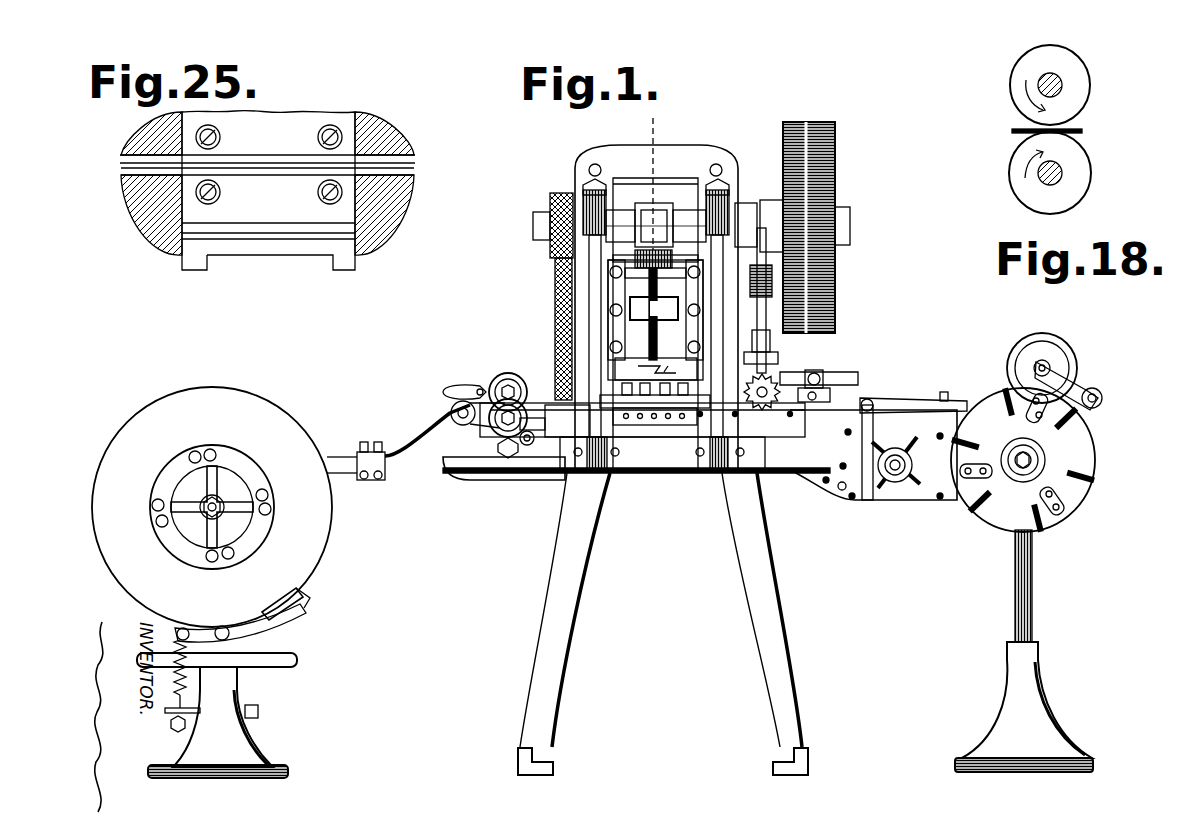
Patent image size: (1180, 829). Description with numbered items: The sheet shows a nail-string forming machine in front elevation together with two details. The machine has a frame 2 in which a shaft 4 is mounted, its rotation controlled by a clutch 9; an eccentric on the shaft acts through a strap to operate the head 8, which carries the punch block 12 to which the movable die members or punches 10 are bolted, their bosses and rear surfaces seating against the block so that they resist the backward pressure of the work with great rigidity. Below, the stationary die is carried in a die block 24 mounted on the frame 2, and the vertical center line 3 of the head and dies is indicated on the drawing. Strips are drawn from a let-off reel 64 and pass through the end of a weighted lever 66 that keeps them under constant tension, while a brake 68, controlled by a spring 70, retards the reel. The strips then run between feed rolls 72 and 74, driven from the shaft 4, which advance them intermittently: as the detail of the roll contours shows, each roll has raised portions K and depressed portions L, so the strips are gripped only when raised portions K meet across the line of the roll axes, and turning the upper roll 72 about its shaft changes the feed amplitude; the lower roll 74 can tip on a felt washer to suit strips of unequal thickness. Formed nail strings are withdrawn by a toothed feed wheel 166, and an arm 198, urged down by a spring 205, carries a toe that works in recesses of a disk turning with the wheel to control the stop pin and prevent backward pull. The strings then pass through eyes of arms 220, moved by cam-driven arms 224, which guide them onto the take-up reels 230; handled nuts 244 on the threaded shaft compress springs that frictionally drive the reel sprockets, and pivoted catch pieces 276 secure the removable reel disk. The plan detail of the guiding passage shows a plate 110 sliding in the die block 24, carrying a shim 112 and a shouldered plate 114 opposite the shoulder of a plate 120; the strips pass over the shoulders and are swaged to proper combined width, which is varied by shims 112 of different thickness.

In FIG. 1, the frame 2 is at (700, 156).
In FIG. 1, the ram slide 3 is at (657, 494).
In FIG. 1, the shaft 4 is at (847, 222).
In FIG. 1, the head 8 is at (633, 283).
In FIG. 1, the clutch 9 is at (766, 305).
In FIG. 1, the die members 10 is at (636, 426).
In FIG. 1, the block 12 is at (630, 385).
In FIG. 1, the die block 24 is at (684, 426).
In FIG. 1, the let-off reel 64 is at (268, 424).
In FIG. 1, the weighted lever 66 is at (378, 442).
In FIG. 1, the brake 68 is at (304, 604).
In FIG. 1, the spring 70 is at (176, 650).
In FIG. 18, the upper feed roll 72 is at (1084, 72).
In FIG. 1, the upper feed roll 72 is at (495, 380).
In FIG. 18, the lower feed roll 74 is at (1091, 185).
In FIG. 1, the lower feed roll 74 is at (500, 430).
In FIG. 1, the feed wheel 166 is at (790, 360).
In FIG. 1, the arm 198 is at (822, 378).
In FIG. 1, the spring 205 is at (810, 396).
In FIG. 1, the arms 220 is at (900, 406).
In FIG. 1, the arms 224 is at (892, 486).
In FIG. 1, the take-up reels 230 is at (1088, 462).
In FIG. 1, the handled nuts 244 is at (906, 484).
In FIG. 1, the catch pieces 276 is at (1062, 493).
In FIG. 25, the plate 110 is at (195, 257).
In FIG. 25, the shim 112 is at (304, 280).
In FIG. 25, the plate 114 is at (347, 199).
In FIG. 25, the plate 120 is at (285, 112).
In FIG. 18, the raised portions K is at (1012, 110).
In FIG. 18, the depressed portions L is at (1020, 64).